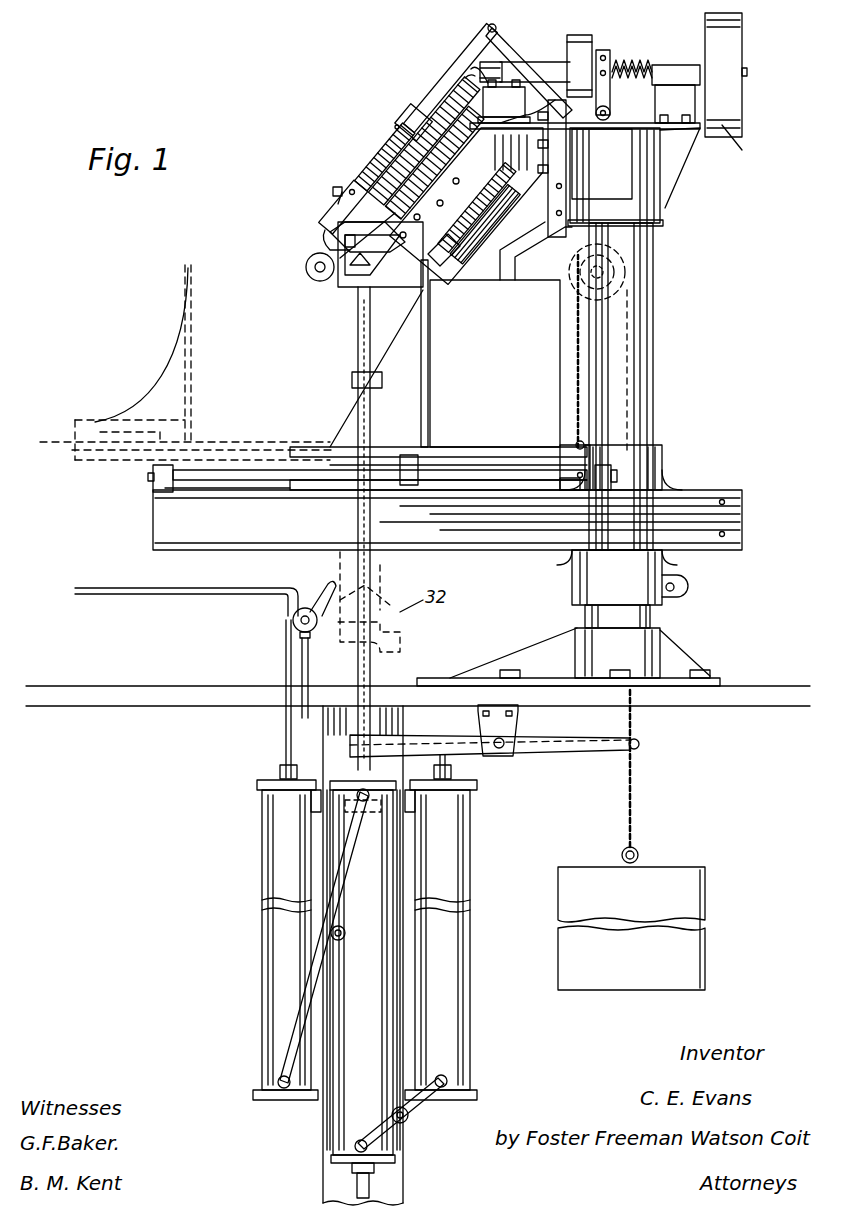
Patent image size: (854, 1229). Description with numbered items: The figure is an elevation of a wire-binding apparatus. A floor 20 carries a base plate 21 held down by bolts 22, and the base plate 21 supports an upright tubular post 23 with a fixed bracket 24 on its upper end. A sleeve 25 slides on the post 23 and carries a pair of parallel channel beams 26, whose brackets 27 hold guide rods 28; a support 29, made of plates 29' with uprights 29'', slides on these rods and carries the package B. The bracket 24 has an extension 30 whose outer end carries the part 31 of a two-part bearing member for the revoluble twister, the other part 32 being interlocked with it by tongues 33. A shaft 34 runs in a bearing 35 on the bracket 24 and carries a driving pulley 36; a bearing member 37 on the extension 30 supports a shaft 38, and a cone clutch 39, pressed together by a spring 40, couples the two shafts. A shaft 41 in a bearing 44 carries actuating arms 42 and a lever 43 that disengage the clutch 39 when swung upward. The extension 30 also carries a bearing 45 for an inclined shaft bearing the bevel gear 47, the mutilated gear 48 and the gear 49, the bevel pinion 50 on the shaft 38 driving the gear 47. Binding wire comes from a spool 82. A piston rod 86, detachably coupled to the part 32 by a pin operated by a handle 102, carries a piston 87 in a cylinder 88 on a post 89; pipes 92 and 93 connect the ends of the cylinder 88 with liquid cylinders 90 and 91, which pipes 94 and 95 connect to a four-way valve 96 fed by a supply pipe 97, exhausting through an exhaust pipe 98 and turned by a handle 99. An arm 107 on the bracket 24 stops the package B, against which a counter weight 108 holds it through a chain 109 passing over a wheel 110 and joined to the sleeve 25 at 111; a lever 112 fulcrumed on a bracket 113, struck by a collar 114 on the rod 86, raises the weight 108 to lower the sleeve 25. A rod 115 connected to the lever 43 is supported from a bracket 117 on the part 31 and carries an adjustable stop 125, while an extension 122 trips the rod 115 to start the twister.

The floor 20 is at (112, 695).
The base plate 21 is at (680, 656).
The bolts 22 is at (700, 678).
The upright tubular post 23 is at (655, 375).
The fixed bracket 24 is at (655, 208).
The sleeve 25 is at (648, 470).
The channel beams 26 is at (165, 522).
The brackets 27 is at (148, 478).
The guide rods 28 is at (265, 483).
The support 29 is at (377, 443).
The plates 29' is at (438, 428).
The uprights 29'' is at (404, 353).
The package B is at (558, 350).
The extension 30 is at (530, 160).
The part of two-part bearing member 31 is at (455, 232).
The part of bearing member 32 is at (345, 248).
The tongues 33 is at (378, 165).
The shaft 34 is at (742, 32).
The bearing 35 is at (672, 62).
The driving pulley 36 is at (785, 150).
The bearing member 37 is at (504, 101).
The shaft 38 is at (550, 60).
The clutch 39 is at (580, 40).
The spring 40 is at (632, 60).
The shaft 41 is at (603, 120).
The actuating arms 42 is at (610, 95).
The lever 43 is at (508, 45).
The bearing 44 is at (622, 130).
The bearing 45 is at (466, 206).
The bevel gear 47 is at (420, 113).
The mutilated gear 48 is at (443, 100).
The gear 49 is at (470, 212).
The bevel pinion 50 is at (466, 72).
The spool 82 is at (310, 274).
The piston rod 86 is at (372, 660).
The piston 87 is at (410, 820).
The cylinder 88 is at (363, 972).
The post 89 is at (400, 1182).
The liquid cylinder 90 is at (262, 936).
The liquid cylinder 91 is at (470, 953).
The pipe 92 is at (286, 1032).
The pipe 93 is at (412, 1112).
The pipe 94 is at (284, 722).
The pipe 95 is at (438, 722).
The four-way valve 96 is at (292, 612).
The supply pipe 97 is at (132, 590).
The exhaust pipe 98 is at (300, 660).
The operating handle 99 is at (325, 590).
The handle 102 is at (350, 287).
The arm 107 is at (512, 262).
The counter weight 108 is at (692, 895).
The chain 109 is at (632, 778).
The wheel 110 is at (578, 268).
The chain connection 111 is at (578, 443).
The lever 112 is at (560, 745).
The bracket 113 is at (515, 730).
The collar 114 is at (352, 380).
The rod 115 is at (473, 45).
The bracket 117 is at (340, 232).
The extension 122 is at (334, 190).
The stop 125 is at (397, 120).